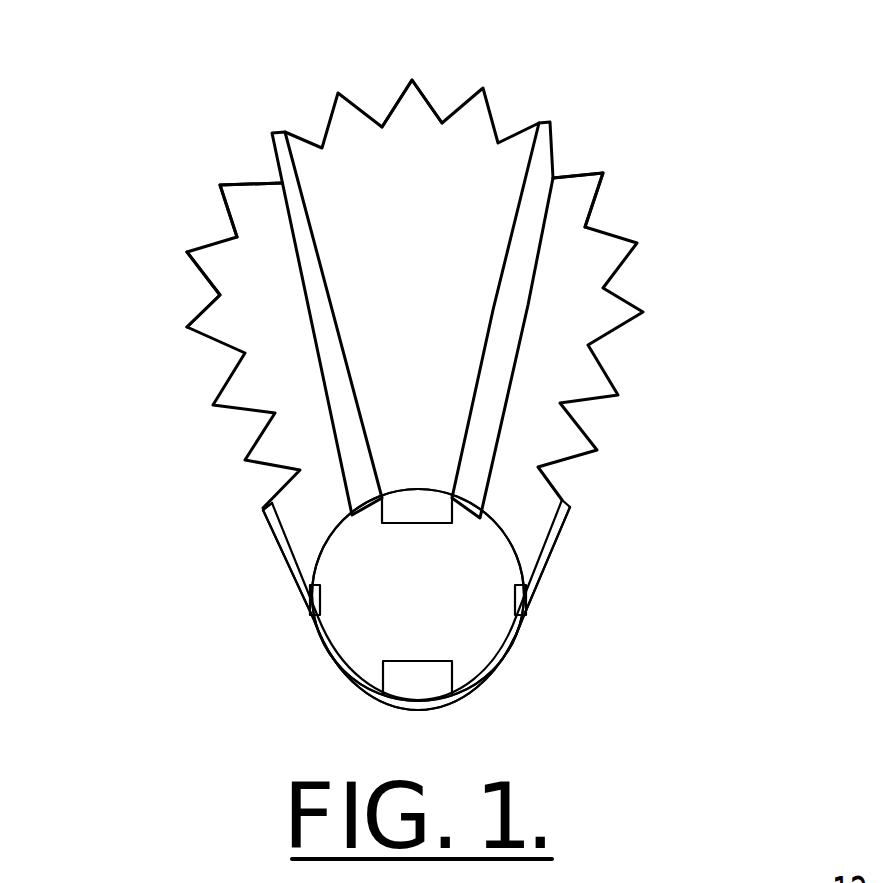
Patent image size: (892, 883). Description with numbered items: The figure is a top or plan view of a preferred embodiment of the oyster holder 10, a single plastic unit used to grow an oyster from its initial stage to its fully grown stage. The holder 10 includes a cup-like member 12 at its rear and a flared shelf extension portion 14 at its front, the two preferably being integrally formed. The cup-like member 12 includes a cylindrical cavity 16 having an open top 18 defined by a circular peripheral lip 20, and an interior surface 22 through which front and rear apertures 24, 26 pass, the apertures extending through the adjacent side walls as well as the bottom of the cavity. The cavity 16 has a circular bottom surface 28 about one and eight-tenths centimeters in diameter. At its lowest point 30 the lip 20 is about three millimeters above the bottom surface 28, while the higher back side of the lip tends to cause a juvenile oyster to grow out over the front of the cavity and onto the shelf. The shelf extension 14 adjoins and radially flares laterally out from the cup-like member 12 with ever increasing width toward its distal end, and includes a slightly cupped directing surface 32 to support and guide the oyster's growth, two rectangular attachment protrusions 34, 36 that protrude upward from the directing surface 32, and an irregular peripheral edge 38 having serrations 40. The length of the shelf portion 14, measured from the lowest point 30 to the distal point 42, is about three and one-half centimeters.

The oyster holder 10 is at (625, 115).
The cup-like member 12 is at (453, 627).
The shelf extension portion 14 is at (370, 208).
The cylindrical cavity 16 is at (315, 617).
The open top 18 is at (418, 595).
The peripheral lip 20 is at (545, 579).
The interior surface 22 is at (487, 650).
The front aperture 24 is at (415, 510).
The rear aperture 26 is at (425, 682).
The bottom surface 28 is at (335, 575).
The lowest point of the lip 30 is at (418, 490).
The directing surface 32 is at (398, 340).
The attachment protrusion 34 is at (508, 320).
The attachment protrusion 36 is at (286, 266).
The peripheral edge 38 is at (506, 533).
The serrations 40 is at (223, 200).
The distal point of shelf 42 is at (412, 80).